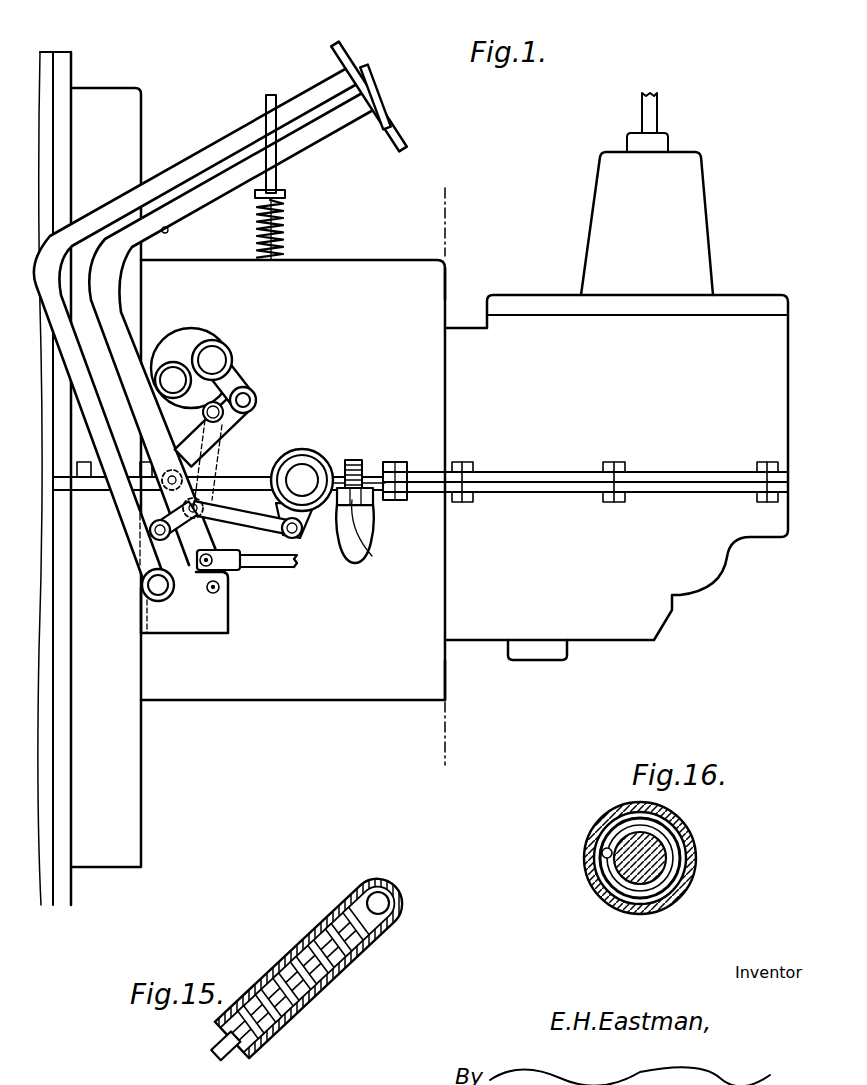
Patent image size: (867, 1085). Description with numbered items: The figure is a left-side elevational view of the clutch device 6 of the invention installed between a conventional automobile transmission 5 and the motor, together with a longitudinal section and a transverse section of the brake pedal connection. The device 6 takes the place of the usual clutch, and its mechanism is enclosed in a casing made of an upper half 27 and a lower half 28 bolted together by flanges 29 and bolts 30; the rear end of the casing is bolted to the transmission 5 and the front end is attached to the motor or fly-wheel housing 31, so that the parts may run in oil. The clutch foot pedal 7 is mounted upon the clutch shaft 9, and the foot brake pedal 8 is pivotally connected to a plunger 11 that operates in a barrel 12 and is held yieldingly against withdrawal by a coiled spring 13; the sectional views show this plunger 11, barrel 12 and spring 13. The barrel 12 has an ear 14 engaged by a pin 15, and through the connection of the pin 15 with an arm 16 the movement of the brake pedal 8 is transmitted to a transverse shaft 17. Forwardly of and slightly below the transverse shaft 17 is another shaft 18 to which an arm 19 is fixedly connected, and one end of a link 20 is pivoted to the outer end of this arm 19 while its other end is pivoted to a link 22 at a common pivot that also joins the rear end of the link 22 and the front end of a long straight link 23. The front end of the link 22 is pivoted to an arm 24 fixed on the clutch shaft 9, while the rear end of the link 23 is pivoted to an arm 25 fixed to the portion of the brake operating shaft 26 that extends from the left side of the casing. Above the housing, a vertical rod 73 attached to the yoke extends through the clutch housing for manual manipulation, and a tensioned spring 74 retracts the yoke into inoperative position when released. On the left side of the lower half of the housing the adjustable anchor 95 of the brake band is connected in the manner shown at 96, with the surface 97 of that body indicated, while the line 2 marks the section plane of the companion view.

In FIG. 1, the section line 2- 2 is at (428, 200).
In FIG. 1, the automobile transmission 5 is at (735, 266).
In FIG. 1, the clutch device 6 is at (376, 260).
In FIG. 1, the clutch foot pedal 7 is at (203, 160).
In FIG. 1, the foot brake pedal 8 is at (336, 139).
In FIG. 1, the clutch shaft 9 is at (144, 585).
In FIG. 15, the plunger 11 is at (225, 1039).
In FIG. 16, the plunger 11 is at (690, 871).
In FIG. 1, the barrel 12 is at (200, 441).
In FIG. 15, the barrel 12 is at (356, 966).
In FIG. 16, the barrel 12 is at (594, 816).
In FIG. 15, the coiled spring 13 is at (318, 998).
In FIG. 16, the coiled spring 13 is at (612, 866).
In FIG. 1, the ear 14 is at (240, 409).
In FIG. 15, the ear 14 is at (375, 881).
In FIG. 1, the pin 15 is at (250, 401).
In FIG. 1, the arm 16 is at (250, 392).
In FIG. 15, the arm 16 is at (305, 940).
In FIG. 1, the transverse shaft 17 is at (215, 361).
In FIG. 1, the shaft 18 is at (175, 375).
In FIG. 1, the arm 19 is at (207, 400).
In FIG. 1, the link 20 is at (224, 471).
In FIG. 1, the link 22 is at (181, 512).
In FIG. 1, the long straight link 23 is at (263, 527).
In FIG. 1, the arm 24 is at (158, 553).
In FIG. 1, the arm 25 is at (305, 522).
In FIG. 1, the shaft 26 is at (302, 478).
In FIG. 1, the upper half of casing 27 is at (447, 284).
In FIG. 1, the lower half of casing 28 is at (447, 690).
In FIG. 1, the flanges 29 is at (421, 470).
In FIG. 1, the bolts 30 is at (395, 462).
In FIG. 1, the motor or fly-wheel housing 31 is at (55, 52).
In FIG. 1, the vertical rod 73 is at (285, 192).
In FIG. 1, the tensioned spring 74 is at (281, 230).
In FIG. 1, the adjustable anchor 95 is at (351, 460).
In FIG. 1, the anchor connection 96 is at (374, 522).
In FIG. 1, the curved surface 97 is at (372, 556).